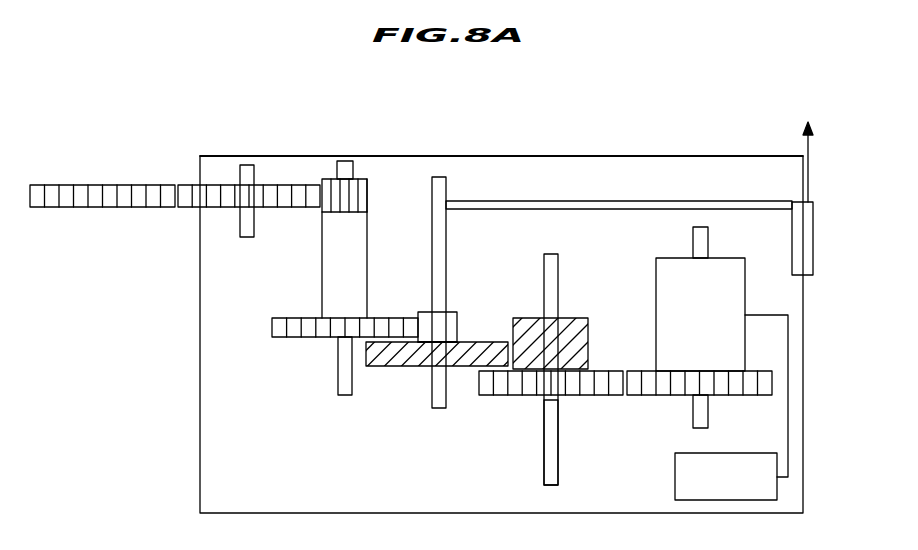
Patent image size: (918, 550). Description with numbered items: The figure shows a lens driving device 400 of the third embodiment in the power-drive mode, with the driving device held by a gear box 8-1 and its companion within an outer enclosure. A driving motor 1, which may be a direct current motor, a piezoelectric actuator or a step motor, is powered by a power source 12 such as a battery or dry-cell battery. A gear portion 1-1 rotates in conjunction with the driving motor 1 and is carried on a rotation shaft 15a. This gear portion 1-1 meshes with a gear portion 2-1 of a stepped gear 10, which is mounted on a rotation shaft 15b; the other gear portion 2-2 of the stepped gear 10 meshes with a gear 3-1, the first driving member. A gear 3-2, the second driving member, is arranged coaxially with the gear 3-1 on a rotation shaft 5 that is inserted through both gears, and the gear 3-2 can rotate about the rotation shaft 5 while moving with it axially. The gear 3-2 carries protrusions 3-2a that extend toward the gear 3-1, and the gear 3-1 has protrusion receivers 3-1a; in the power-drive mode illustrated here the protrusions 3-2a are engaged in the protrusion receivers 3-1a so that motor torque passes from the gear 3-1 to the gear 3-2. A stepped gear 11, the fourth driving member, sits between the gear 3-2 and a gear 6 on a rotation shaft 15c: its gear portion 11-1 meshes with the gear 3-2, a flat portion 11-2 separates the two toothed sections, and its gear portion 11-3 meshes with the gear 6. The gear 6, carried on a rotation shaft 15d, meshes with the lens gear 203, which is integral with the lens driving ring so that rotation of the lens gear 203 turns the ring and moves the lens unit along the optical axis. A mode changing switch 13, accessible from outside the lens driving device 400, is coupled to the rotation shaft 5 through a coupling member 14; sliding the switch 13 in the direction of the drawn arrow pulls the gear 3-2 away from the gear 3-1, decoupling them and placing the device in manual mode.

The lens driving device 400 is at (570, 172).
The gear box 8-1 is at (700, 157).
The lens gear 203 is at (111, 195).
The gear 6 is at (212, 192).
The rotation shaft 15d is at (246, 222).
The rotation shaft 15c is at (345, 168).
The stepped gear 11 is at (361, 168).
The gear portion 11-3 is at (368, 193).
The flat portion 11-2 is at (323, 270).
The gear portion 11-1 is at (279, 330).
The gear 3-2 is at (430, 314).
The rotation shaft 5 is at (447, 190).
The coupling member 14 is at (712, 200).
The gear 3-1 is at (382, 363).
The protrusion receivers 3-1a is at (456, 345).
The protrusions 3-2a is at (428, 352).
The gear portion 2-2 is at (572, 325).
The stepped gear 10 is at (563, 310).
The gear portion 2-1 is at (600, 398).
The rotation shaft 15b is at (548, 466).
The driving motor 1 is at (736, 292).
The gear portion 1-1 is at (746, 385).
The rotation shaft 15a is at (708, 411).
The mode changing switch 13 is at (813, 243).
The power source 12 is at (757, 485).